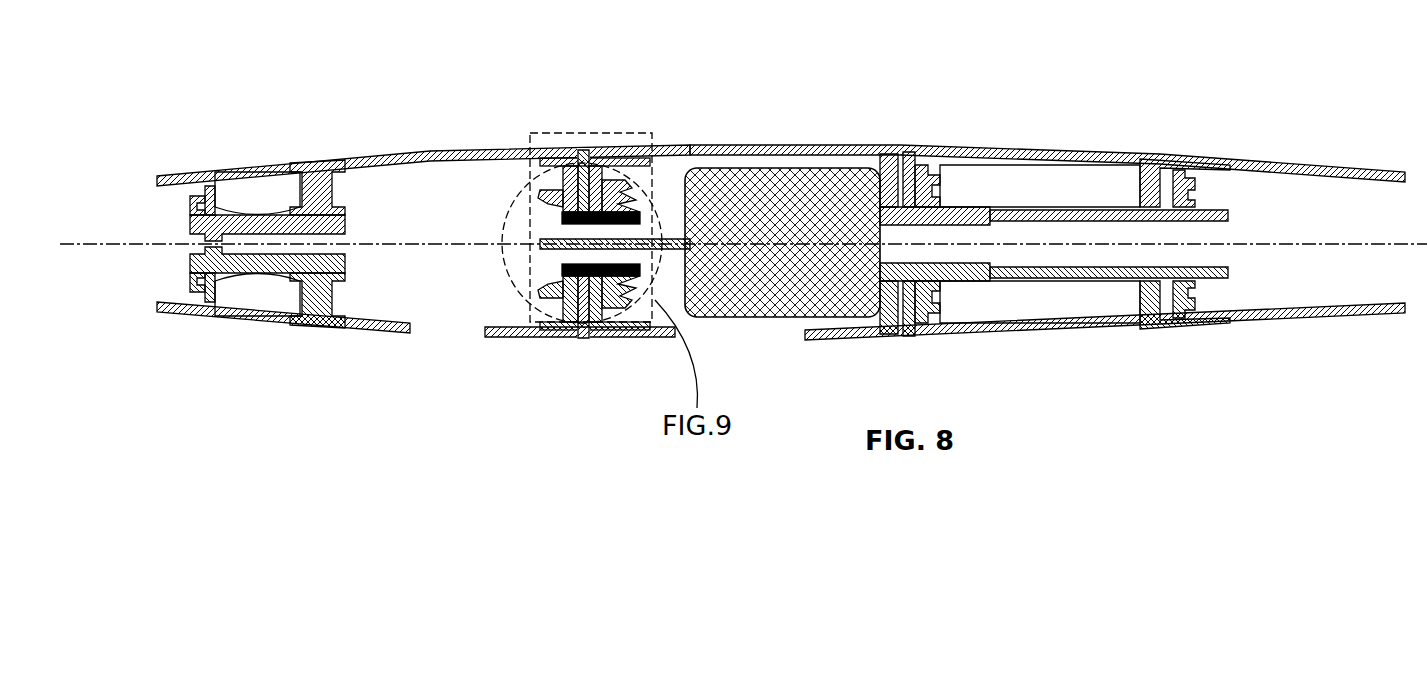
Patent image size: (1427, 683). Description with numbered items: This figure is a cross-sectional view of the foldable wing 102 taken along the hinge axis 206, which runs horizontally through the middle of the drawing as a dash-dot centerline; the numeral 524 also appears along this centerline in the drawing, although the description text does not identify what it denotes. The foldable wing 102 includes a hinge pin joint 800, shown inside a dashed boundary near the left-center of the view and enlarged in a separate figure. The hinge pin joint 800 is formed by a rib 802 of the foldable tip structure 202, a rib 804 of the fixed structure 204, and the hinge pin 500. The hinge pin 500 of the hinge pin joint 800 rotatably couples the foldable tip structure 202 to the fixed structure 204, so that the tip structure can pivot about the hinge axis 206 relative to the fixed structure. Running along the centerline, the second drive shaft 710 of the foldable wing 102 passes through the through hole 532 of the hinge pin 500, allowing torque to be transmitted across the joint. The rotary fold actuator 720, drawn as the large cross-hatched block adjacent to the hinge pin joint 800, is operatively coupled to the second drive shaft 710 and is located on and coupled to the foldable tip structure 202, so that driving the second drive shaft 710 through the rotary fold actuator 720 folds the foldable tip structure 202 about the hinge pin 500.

The foldable wing 102 is at (1357, 173).
The foldable tip structure 202 is at (798, 147).
The fixed structure 204 is at (470, 150).
The hinge axis 206 is at (1270, 248).
The hinge pin 500 is at (548, 294).
The central axis 524 is at (1312, 244).
The through hole 532 is at (600, 292).
The second drive shaft 710 is at (537, 250).
The rotary fold actuator 720 is at (740, 317).
The hinge pin joint 800 is at (640, 198).
The rib 802 is at (592, 162).
The rib 804 is at (571, 176).